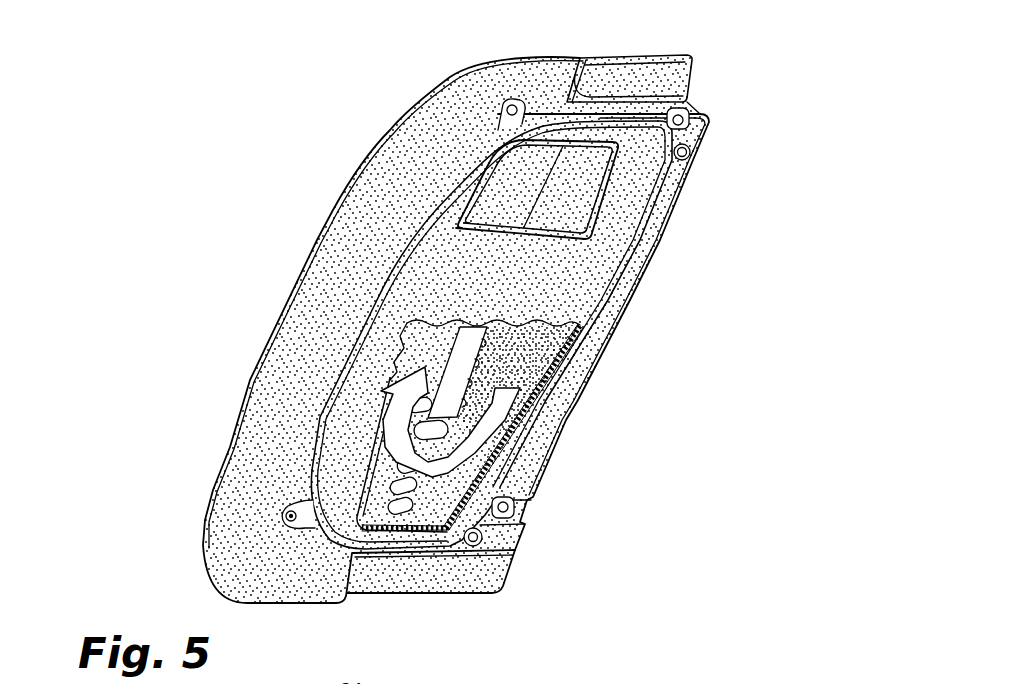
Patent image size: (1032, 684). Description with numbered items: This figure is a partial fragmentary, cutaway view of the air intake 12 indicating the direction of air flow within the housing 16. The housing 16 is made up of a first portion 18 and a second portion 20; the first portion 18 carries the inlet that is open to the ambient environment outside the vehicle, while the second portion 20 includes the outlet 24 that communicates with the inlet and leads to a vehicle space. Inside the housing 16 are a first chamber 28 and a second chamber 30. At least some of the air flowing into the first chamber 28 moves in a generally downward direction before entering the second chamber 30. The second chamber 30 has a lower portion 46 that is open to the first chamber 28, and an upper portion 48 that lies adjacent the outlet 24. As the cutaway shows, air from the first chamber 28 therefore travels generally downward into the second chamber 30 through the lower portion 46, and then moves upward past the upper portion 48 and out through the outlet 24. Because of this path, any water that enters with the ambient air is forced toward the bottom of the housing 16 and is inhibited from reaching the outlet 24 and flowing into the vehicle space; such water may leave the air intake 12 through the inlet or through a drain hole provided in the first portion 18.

The air intake 12 is at (737, 121).
The housing 16 is at (256, 355).
The first portion 18 is at (327, 222).
The second portion 20 is at (652, 220).
The outlet 24 is at (481, 184).
The first chamber 28 is at (524, 373).
The second chamber 30 is at (366, 490).
The lower portion 46 is at (370, 432).
The upper portion 48 is at (447, 228).